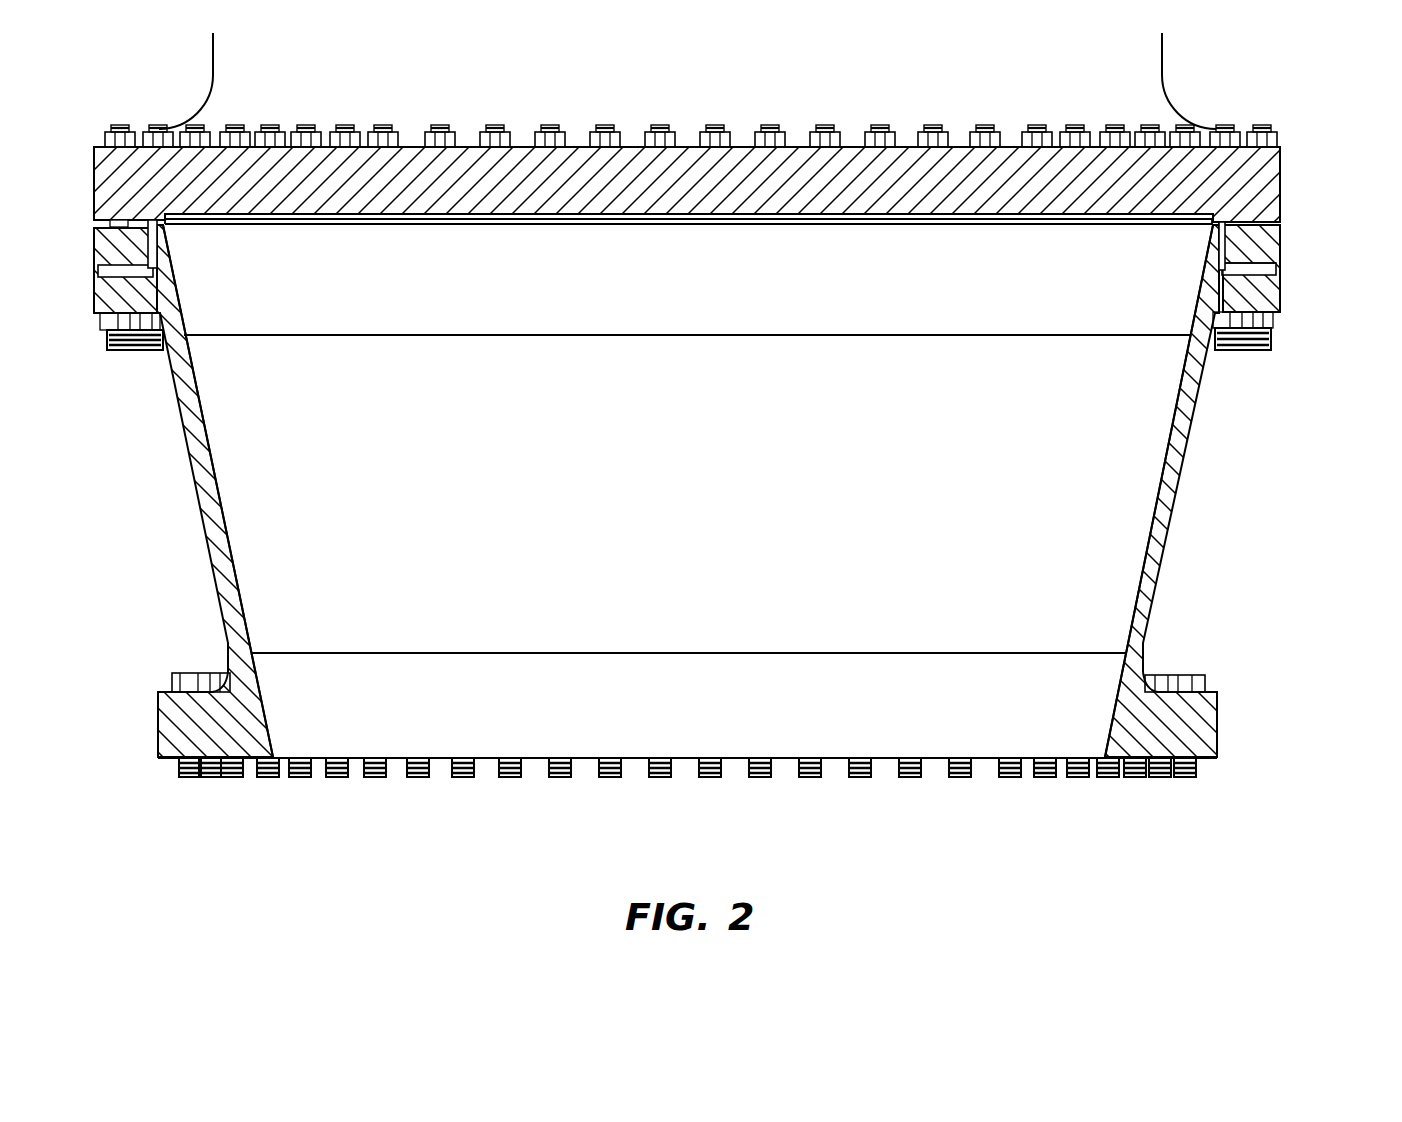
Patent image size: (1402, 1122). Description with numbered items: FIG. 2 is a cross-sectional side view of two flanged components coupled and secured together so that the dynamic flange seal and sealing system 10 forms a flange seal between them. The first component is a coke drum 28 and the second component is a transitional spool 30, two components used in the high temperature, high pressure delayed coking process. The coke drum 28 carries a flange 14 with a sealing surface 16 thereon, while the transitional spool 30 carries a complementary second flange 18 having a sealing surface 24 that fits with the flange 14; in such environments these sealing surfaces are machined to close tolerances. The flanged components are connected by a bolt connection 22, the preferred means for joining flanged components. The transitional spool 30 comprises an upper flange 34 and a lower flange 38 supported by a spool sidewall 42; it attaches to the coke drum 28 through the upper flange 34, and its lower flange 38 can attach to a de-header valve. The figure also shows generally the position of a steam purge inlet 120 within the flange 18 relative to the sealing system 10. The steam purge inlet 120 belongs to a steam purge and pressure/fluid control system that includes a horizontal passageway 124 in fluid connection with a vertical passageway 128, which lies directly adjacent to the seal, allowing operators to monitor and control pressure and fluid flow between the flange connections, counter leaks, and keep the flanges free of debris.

The dynamic flange seal and sealing system 10 is at (172, 243).
The flange 14 is at (1282, 197).
The sealing surface 16 is at (1242, 213).
The second flange 18 is at (1281, 243).
The bolt connection 22 is at (1028, 124).
The sealing surface 24 is at (127, 232).
The coke drum 28 is at (1165, 52).
The transitional spool 30 is at (1165, 548).
The upper flange 34 is at (1283, 297).
The lower flange 38 is at (1218, 725).
The sidewall 42 is at (1182, 478).
The steam purge inlet 120 is at (1290, 267).
The horizontal passageway 124 is at (1238, 275).
The vertical passageway 128 is at (1210, 250).